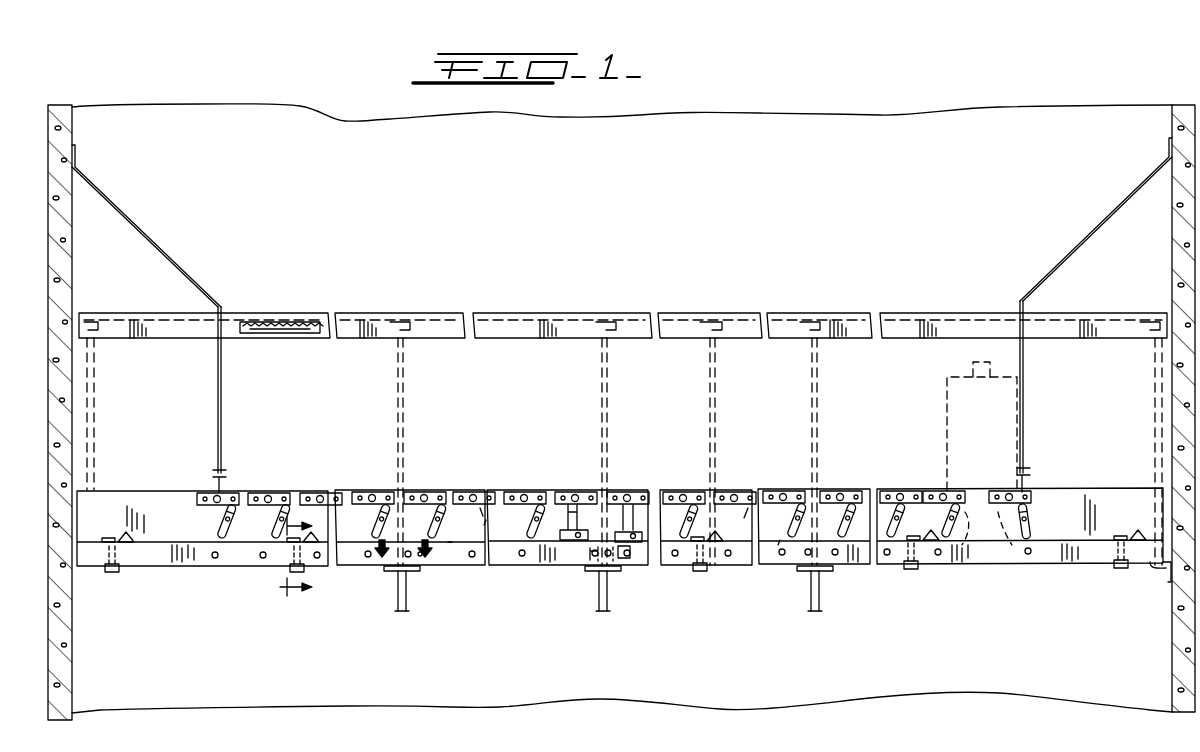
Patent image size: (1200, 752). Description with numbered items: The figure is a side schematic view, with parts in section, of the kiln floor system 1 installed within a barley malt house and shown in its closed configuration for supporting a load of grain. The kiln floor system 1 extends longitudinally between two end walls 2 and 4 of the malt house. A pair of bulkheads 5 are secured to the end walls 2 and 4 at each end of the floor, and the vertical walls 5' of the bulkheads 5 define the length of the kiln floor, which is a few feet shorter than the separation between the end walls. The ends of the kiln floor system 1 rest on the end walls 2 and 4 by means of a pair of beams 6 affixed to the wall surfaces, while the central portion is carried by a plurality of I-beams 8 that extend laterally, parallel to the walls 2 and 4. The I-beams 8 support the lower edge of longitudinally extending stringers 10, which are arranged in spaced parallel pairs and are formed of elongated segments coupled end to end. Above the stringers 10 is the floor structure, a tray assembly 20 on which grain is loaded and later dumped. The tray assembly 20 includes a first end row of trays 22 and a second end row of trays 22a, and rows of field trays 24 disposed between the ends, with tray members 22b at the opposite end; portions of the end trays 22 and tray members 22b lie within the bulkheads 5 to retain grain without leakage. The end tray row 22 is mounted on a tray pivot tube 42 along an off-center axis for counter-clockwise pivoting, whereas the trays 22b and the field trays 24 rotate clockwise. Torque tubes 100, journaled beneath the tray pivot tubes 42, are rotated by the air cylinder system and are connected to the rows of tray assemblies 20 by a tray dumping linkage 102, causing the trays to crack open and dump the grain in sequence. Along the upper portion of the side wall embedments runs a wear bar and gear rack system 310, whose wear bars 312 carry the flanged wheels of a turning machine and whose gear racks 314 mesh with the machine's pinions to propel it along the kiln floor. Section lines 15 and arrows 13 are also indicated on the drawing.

The kiln floor system 1 is at (855, 262).
The end wall 2 is at (1180, 192).
The end wall 4 is at (58, 281).
The bulkhead 5 is at (622, 222).
The vertical wall of bulkhead 5' is at (621, 379).
The beam 6 is at (1158, 570).
The I-beam 8 is at (397, 593).
The stringer 10 is at (203, 559).
The arrow 13 is at (415, 554).
The section line 15 is at (308, 563).
The tray assembly 20 is at (609, 529).
The end row of trays 22 is at (1016, 489).
The second end row of trays 22a is at (938, 493).
The tray members 22b is at (204, 499).
The field tray 24 is at (670, 491).
The tray pivot tube 42 is at (269, 505).
The torque tube 100 is at (448, 548).
The tray dumping linkage 102 is at (780, 544).
The wear bar and gear rack system 310 is at (623, 310).
The wear bar 312 is at (569, 312).
The gear rack 314 is at (290, 333).